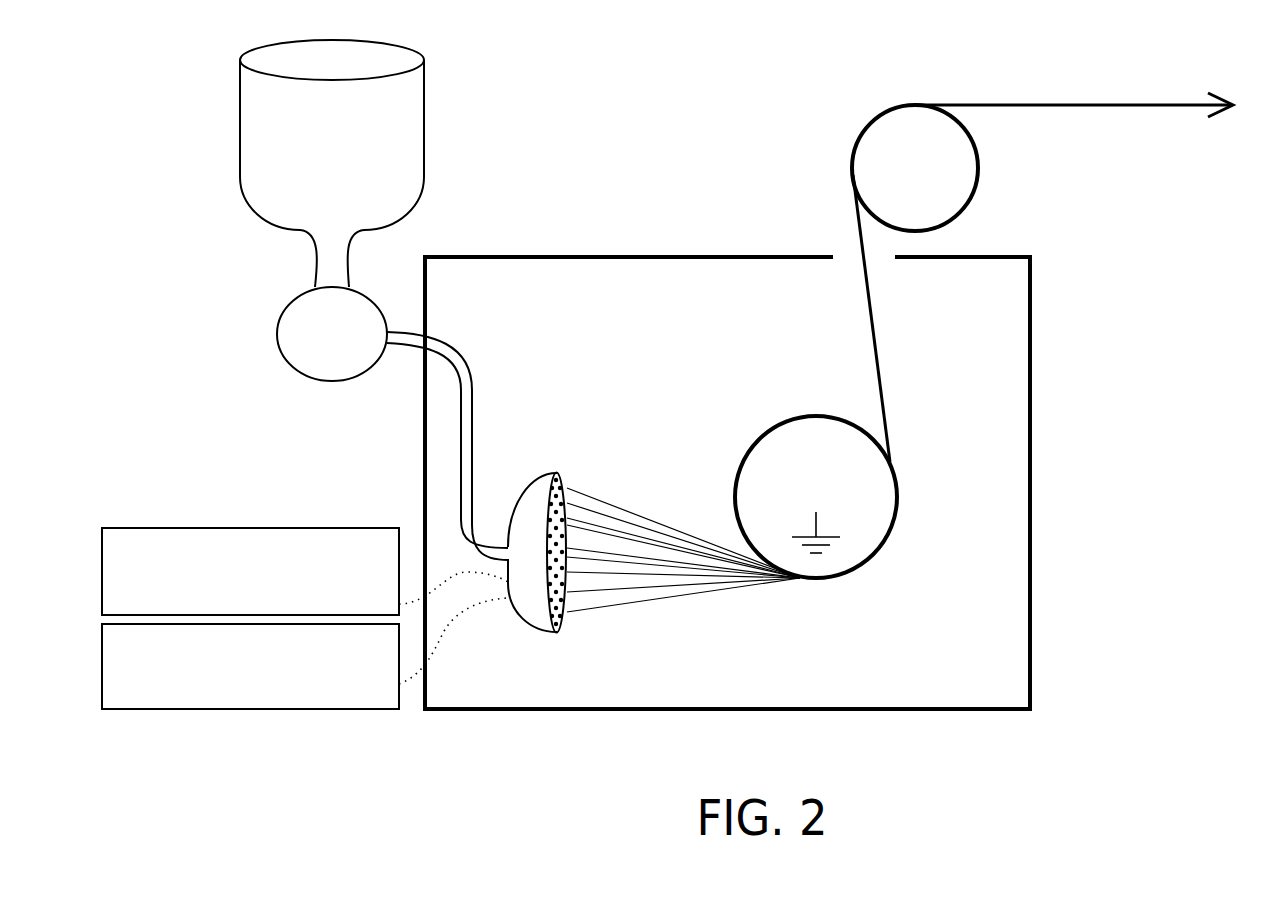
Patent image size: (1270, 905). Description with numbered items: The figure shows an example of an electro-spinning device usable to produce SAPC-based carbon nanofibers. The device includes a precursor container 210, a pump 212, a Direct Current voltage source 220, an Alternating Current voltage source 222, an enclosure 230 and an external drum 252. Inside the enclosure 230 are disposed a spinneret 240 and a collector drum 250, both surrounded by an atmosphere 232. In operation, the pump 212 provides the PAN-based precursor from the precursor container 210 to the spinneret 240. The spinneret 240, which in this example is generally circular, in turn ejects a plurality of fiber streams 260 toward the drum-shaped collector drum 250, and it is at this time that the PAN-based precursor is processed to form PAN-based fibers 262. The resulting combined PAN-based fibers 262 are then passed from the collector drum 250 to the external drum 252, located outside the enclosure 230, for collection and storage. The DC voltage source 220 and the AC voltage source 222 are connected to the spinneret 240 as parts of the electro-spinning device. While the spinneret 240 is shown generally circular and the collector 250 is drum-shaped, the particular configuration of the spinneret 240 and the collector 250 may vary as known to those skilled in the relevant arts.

The precursor container 210 is at (313, 167).
The pump 212 is at (278, 350).
The Direct Current (DC) voltage source 220 is at (232, 606).
The Alternating Current (AC) voltage source 222 is at (232, 697).
The enclosure 230 is at (1033, 627).
The atmosphere 232 is at (926, 661).
The spinneret 240 is at (516, 486).
The collector drum 250 is at (793, 496).
The external drum 252 is at (895, 182).
The fiber streams 260 is at (627, 487).
The PAN-based fibers 262 is at (1030, 97).